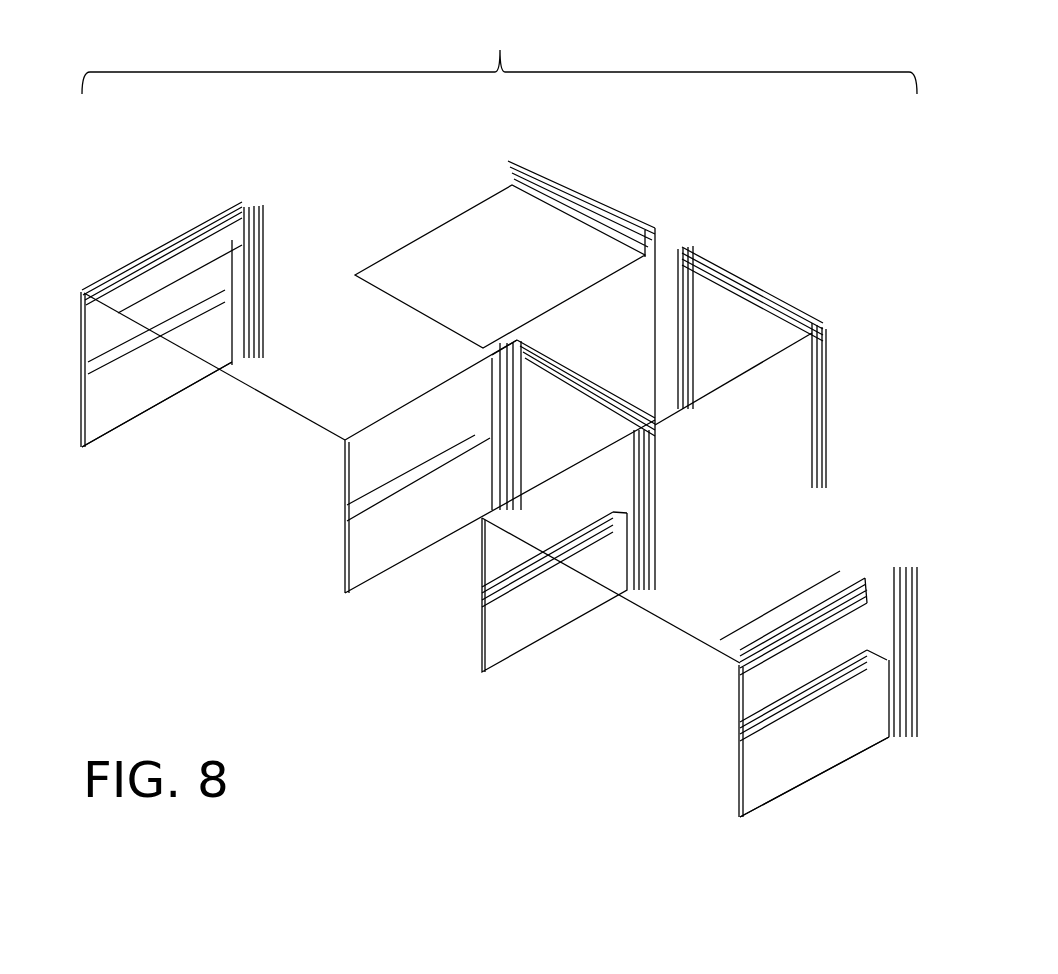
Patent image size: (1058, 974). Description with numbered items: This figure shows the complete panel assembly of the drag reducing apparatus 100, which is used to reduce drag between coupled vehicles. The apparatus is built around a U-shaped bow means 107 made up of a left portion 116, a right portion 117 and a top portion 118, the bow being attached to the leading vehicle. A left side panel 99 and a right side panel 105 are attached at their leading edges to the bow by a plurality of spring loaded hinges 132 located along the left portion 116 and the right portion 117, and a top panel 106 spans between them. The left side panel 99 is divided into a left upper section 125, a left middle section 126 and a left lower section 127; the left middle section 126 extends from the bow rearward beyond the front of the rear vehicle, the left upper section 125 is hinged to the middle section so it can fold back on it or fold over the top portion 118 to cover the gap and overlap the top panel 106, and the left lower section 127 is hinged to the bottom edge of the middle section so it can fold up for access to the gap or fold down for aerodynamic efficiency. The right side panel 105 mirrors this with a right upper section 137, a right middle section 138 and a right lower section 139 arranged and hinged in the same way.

The drag reducing apparatus 100 is at (499, 55).
The left side panel 99 is at (362, 347).
The left upper section 125 is at (226, 243).
The spring loaded hinges 132 is at (246, 204).
The top panel 106 is at (340, 254).
The U-shaped bow means 107 is at (779, 327).
The left portion 116 is at (680, 282).
The top portion 118 is at (753, 299).
The right portion 117 is at (821, 431).
The right side panel 105 is at (699, 683).
The left middle section 126 is at (103, 328).
The left lower section 127 is at (165, 390).
The right upper section 137 is at (726, 647).
The right middle section 138 is at (754, 704).
The right lower section 139 is at (759, 781).